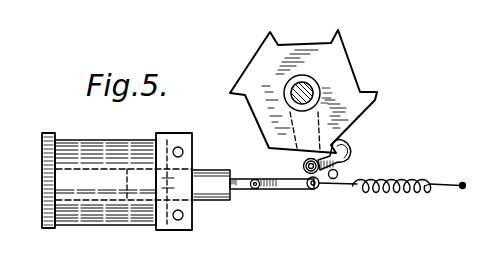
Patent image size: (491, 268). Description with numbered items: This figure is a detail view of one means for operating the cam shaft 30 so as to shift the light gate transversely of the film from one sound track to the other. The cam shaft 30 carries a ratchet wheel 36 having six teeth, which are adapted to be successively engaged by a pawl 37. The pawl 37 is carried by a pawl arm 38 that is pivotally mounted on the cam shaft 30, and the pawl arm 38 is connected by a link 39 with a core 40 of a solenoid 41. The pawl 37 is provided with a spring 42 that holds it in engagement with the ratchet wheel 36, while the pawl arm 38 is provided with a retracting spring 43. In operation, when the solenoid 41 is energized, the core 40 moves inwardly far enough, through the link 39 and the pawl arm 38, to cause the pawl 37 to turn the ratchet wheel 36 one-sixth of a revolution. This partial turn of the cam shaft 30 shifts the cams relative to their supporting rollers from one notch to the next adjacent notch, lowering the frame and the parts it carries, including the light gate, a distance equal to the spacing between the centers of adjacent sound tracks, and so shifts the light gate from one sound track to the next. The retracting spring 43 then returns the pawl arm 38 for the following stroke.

The cam shaft 30 is at (316, 90).
The ratchet wheel 36 is at (306, 46).
The pawl 37 is at (351, 151).
The pawl arm 38 is at (300, 155).
The link 39 is at (288, 190).
The core 40 is at (207, 200).
The solenoid 41 is at (120, 221).
The spring 42 is at (320, 189).
The retracting spring 43 is at (416, 193).